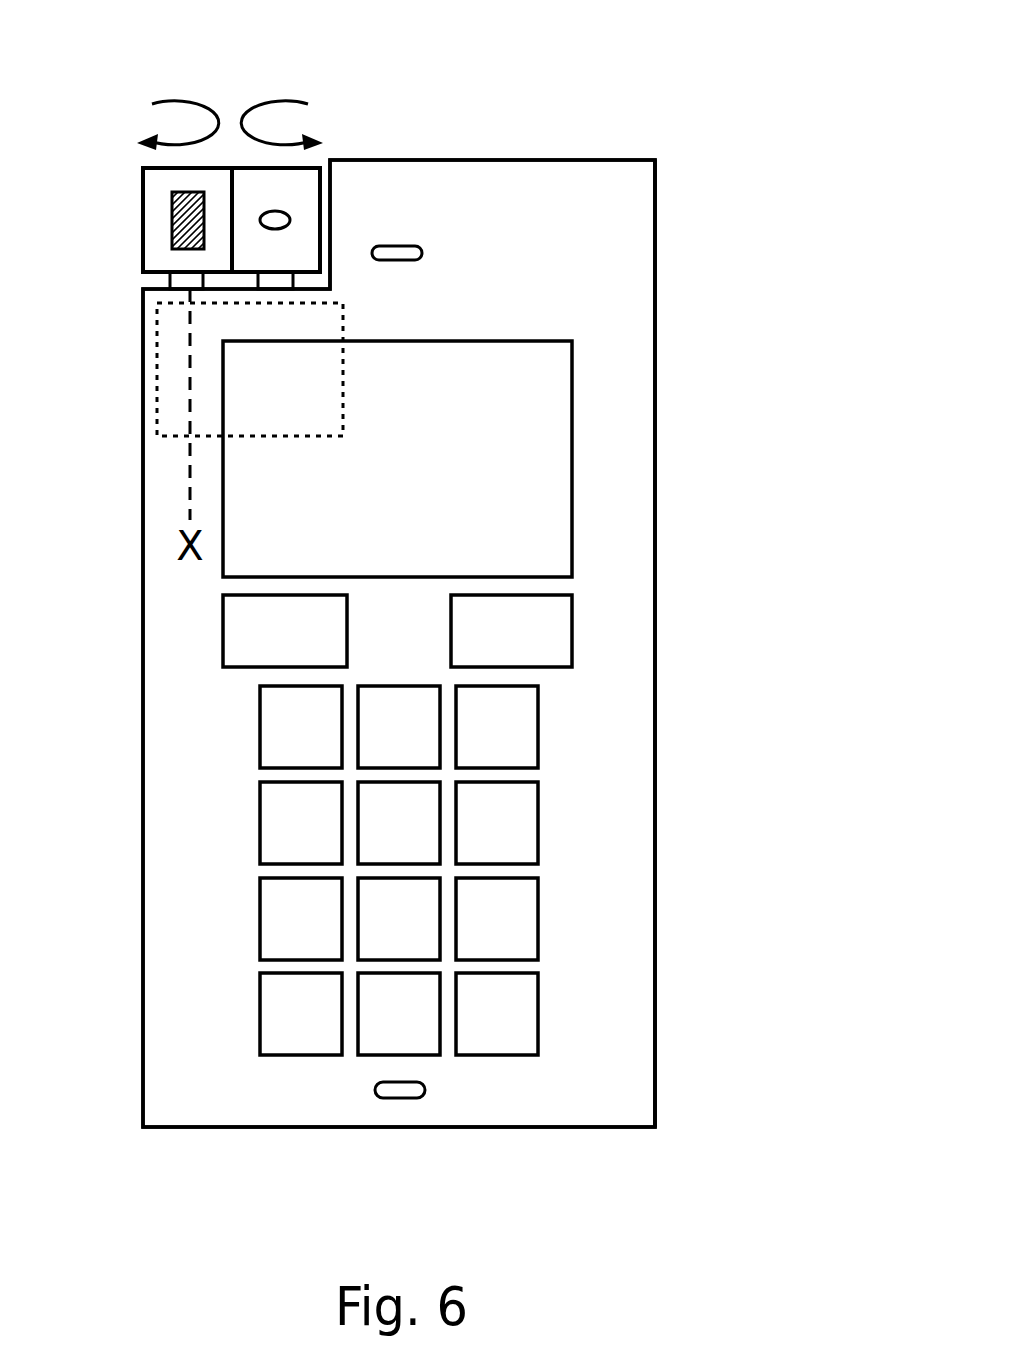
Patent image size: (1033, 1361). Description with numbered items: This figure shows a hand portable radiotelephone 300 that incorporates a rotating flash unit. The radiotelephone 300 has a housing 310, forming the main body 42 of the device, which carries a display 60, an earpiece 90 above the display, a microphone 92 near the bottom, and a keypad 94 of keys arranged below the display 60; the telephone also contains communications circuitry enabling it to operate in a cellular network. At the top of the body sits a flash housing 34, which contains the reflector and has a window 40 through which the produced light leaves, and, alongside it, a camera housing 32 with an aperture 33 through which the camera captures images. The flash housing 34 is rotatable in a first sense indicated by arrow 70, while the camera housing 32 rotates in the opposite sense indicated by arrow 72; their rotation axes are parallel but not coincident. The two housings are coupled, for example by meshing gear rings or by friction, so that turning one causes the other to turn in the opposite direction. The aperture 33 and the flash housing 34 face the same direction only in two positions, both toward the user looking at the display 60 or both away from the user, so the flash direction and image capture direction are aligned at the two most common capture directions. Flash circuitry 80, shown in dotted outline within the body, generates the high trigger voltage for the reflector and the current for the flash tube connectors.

The camera housing 32 is at (320, 187).
The aperture 33 is at (290, 220).
The flash housing 34 is at (143, 200).
The window 40 is at (183, 221).
The main body 42 is at (652, 300).
The display 60 is at (572, 462).
The arrow 70 is at (178, 98).
The arrow 72 is at (282, 98).
The flash circuitry 80 is at (343, 368).
The earpiece 90 is at (422, 253).
The microphone 92 is at (398, 1098).
The keypad 94 is at (538, 823).
The hand portable radiotelephone 300 is at (772, 607).
The housing 310 is at (653, 945).